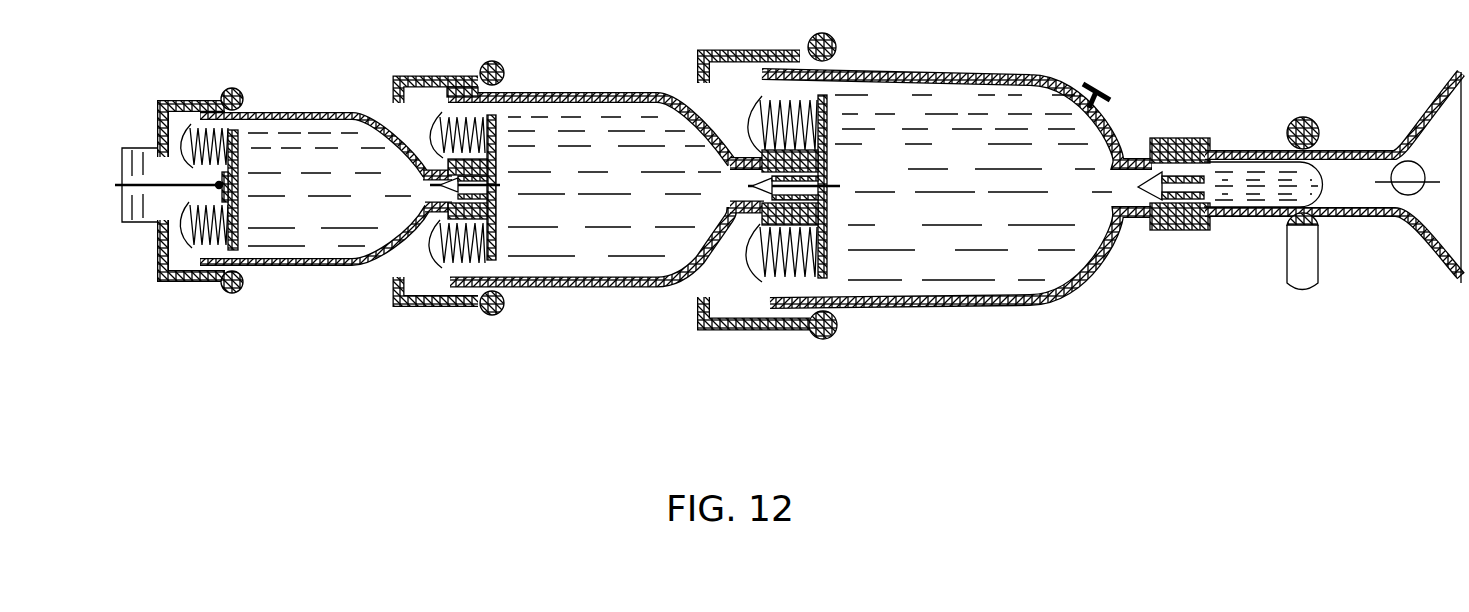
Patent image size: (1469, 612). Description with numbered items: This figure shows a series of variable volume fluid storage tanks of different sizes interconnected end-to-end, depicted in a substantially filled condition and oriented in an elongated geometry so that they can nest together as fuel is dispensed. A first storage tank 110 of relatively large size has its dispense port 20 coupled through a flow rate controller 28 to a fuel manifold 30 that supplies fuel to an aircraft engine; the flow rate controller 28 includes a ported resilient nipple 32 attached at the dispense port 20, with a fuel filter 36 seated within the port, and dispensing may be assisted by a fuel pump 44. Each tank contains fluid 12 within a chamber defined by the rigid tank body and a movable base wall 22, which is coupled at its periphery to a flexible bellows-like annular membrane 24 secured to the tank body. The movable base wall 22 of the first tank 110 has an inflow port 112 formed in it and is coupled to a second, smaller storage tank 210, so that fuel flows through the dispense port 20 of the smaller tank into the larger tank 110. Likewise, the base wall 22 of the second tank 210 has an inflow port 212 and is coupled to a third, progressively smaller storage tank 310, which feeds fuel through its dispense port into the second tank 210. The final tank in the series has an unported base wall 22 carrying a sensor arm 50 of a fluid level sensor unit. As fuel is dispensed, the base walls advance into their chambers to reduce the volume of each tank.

The fluid 12 is at (918, 268).
The dispense port 20 is at (430, 188).
The base wall 22 is at (238, 216).
The annular membrane 24 is at (178, 250).
The flow rate controller 28 is at (1222, 240).
The fuel manifold 30 is at (1415, 250).
The resilient nipple 32 is at (1222, 150).
The fuel filter 36 is at (1150, 228).
The fuel pump 44 is at (1396, 152).
The sensor arm 50 is at (142, 200).
The first storage tank 110 is at (944, 60).
The inflow port 112 is at (830, 185).
The second storage tank 210 is at (562, 82).
The inflow port 212 is at (497, 190).
The third storage tank 310 is at (293, 104).